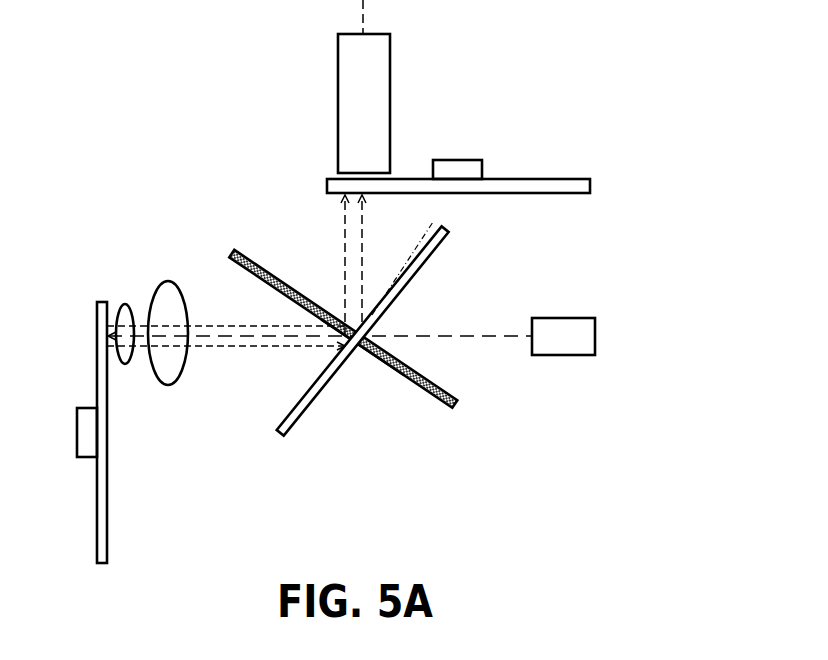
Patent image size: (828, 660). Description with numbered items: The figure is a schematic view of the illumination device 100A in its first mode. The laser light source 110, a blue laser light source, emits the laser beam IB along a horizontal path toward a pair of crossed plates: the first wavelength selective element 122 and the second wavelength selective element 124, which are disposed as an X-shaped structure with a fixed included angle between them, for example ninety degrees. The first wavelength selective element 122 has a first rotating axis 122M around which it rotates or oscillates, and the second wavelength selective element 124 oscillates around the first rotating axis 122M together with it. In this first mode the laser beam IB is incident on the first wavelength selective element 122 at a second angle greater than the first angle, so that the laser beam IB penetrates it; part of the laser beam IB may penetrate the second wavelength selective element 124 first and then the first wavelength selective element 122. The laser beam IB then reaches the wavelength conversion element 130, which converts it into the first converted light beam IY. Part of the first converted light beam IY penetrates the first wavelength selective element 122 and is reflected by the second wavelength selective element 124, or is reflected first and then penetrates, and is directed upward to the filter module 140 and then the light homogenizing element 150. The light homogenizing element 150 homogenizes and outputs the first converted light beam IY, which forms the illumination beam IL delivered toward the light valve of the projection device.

The illumination device 100A is at (717, 540).
The laser light source 110 is at (597, 336).
The first wavelength selective element 122 is at (453, 392).
The first rotating axis 122M is at (388, 348).
The second wavelength selective element 124 is at (300, 415).
The wavelength conversion element 130 is at (97, 516).
The filter module 140 is at (553, 178).
The light homogenizing element 150 is at (338, 85).
The illumination beam IL is at (361, 10).
The laser beam IB is at (498, 335).
The first converted light beam IY is at (202, 323).